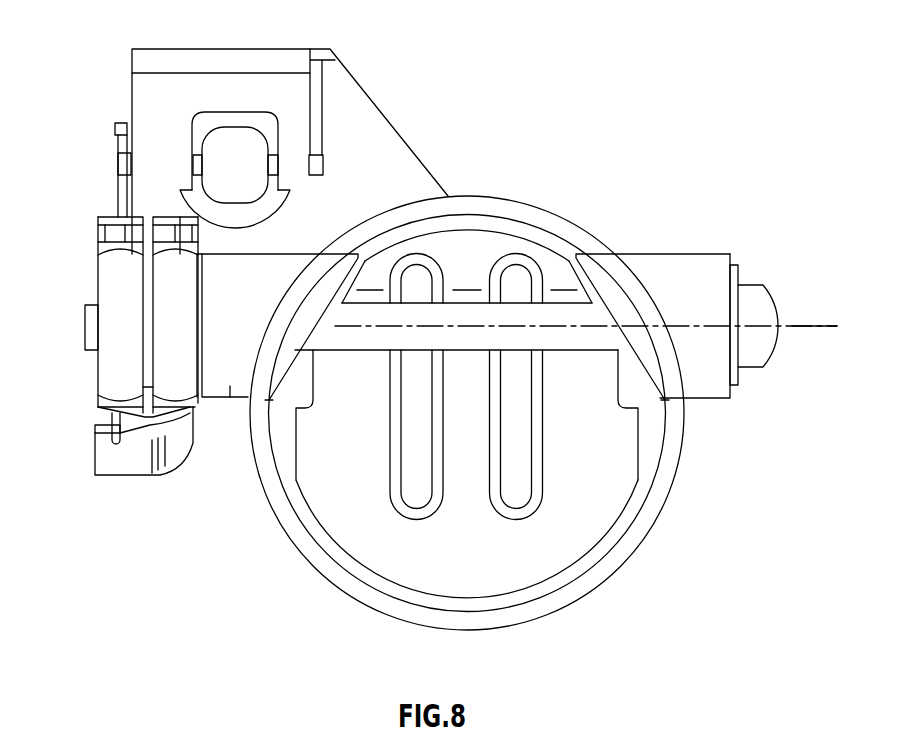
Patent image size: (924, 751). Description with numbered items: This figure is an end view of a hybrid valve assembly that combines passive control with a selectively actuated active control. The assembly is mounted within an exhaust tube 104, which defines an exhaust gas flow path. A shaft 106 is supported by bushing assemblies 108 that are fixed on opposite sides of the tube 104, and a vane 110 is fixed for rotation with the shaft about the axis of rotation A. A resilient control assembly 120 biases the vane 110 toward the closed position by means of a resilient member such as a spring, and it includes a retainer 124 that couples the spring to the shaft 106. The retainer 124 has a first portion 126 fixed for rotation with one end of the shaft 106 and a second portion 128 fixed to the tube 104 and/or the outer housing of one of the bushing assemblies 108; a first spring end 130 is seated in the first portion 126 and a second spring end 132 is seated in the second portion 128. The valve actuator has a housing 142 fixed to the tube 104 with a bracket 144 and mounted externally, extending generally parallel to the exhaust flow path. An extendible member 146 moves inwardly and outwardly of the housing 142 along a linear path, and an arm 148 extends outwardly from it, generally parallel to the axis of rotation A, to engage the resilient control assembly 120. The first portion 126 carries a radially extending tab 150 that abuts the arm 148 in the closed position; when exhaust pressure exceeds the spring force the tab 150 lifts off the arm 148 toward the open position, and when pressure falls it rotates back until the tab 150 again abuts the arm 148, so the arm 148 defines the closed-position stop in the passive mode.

The exhaust tube 104 is at (543, 218).
The shaft 106 is at (570, 325).
The bushing assemblies 108 is at (685, 278).
The vane 110 is at (563, 534).
The resilient control assembly 120 is at (116, 336).
The retainer 124 is at (100, 210).
The first portion 126 is at (118, 285).
The second portion 128 is at (180, 370).
The first spring end 130 is at (105, 433).
The second spring end 132 is at (177, 218).
The housing 142 is at (211, 125).
The bracket 144 is at (348, 140).
The extendible member 146 is at (240, 148).
The arm 148 is at (121, 162).
The radially extending tab 150 is at (118, 124).
The axis of rotation A is at (815, 325).